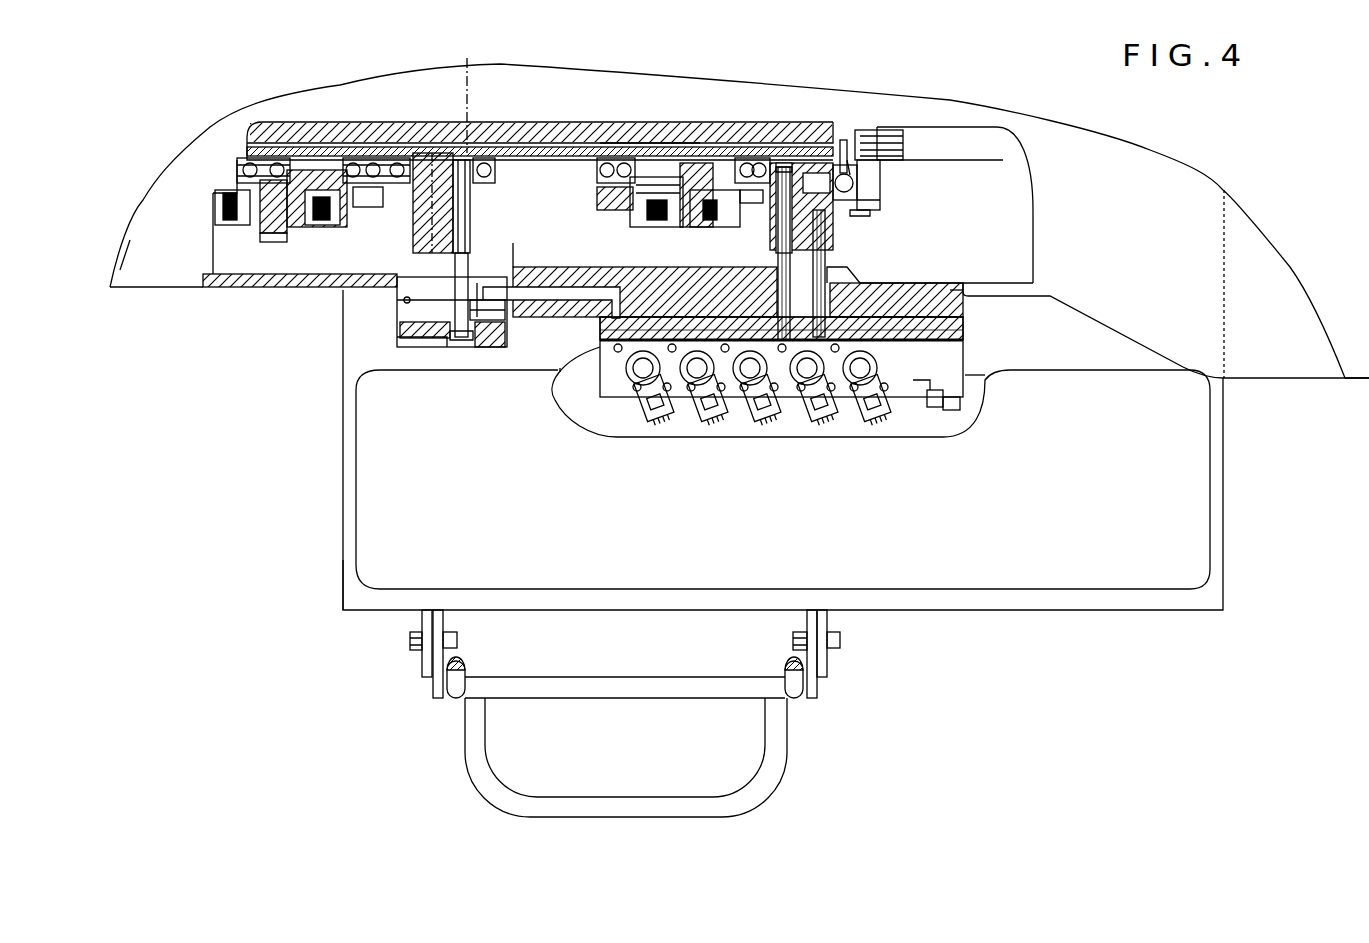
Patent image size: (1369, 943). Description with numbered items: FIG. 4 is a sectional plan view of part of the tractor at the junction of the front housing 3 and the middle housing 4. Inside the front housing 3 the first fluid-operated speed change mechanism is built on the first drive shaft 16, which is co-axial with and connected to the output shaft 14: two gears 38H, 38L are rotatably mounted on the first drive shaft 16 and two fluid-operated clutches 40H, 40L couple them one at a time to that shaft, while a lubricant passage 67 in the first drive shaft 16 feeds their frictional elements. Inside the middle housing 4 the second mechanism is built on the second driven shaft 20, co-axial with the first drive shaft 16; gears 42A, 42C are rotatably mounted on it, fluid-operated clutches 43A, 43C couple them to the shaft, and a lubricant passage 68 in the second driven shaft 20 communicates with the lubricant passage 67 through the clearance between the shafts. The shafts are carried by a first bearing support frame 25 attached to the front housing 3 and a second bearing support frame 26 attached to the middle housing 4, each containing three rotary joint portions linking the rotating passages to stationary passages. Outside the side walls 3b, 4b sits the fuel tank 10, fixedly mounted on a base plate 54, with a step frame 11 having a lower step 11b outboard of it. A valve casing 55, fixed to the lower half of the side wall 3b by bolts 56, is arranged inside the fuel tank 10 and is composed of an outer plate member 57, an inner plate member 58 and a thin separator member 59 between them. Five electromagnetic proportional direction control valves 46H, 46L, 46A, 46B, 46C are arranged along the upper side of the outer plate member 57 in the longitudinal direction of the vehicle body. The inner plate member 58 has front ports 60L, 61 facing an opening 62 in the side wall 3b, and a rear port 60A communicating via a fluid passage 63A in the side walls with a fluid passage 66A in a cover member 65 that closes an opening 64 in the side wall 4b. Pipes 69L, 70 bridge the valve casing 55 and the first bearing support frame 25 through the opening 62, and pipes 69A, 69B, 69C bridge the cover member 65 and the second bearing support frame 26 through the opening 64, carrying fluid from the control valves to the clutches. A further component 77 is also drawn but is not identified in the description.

The front housing 3 is at (1092, 262).
The side wall 3b is at (950, 293).
The middle housing 4 is at (170, 265).
The side wall 4b is at (245, 287).
The fuel tank 10 is at (1003, 560).
The step frame 11 is at (808, 728).
The lower step 11b is at (770, 778).
The output shaft 14 is at (962, 152).
The first drive shaft 16 is at (760, 132).
The second driven shaft 20 is at (330, 122).
The first bearing support frame 25 is at (827, 150).
The second bearing support frame 26 is at (432, 165).
The gear 38H is at (603, 210).
The gear 38L is at (705, 165).
The fluid-operated clutch 40H is at (650, 230).
The fluid-operated clutch 40L is at (713, 227).
The gear 42A is at (267, 242).
The gear 42C is at (373, 208).
The fluid-operated clutch 43A is at (223, 207).
The fluid-operated clutch 43C is at (313, 227).
The electromagnetic proportional direction control valve 46A is at (742, 372).
The electromagnetic proportional direction control valve 46B is at (690, 372).
The electromagnetic proportional direction control valve 46C is at (640, 372).
The electromagnetic proportional direction control valve 46H is at (855, 375).
The electromagnetic proportional direction control valve 46L is at (870, 375).
The base plate 54 is at (343, 580).
The valve casing 55 is at (987, 381).
The bolt 56 is at (953, 410).
The outer plate member 57 is at (612, 388).
The inner plate member 58 is at (890, 320).
The thin separator member 59 is at (860, 320).
The port 60A is at (560, 372).
The port 60L is at (793, 345).
The port 61 is at (797, 375).
The opening 62 is at (733, 317).
The fluid passage 63A is at (500, 347).
The opening 64 is at (410, 298).
The cover member 65 is at (400, 327).
The fluid passage 66A is at (430, 345).
The lubricant passage 67 is at (640, 130).
The lubricant passage 68 is at (280, 147).
The pipe 69A is at (466, 250).
The pipe 69B is at (477, 86).
The pipe 69C is at (455, 340).
The pipe 69L is at (853, 153).
The pipe 70 is at (833, 253).
The gasket 77 is at (618, 327).